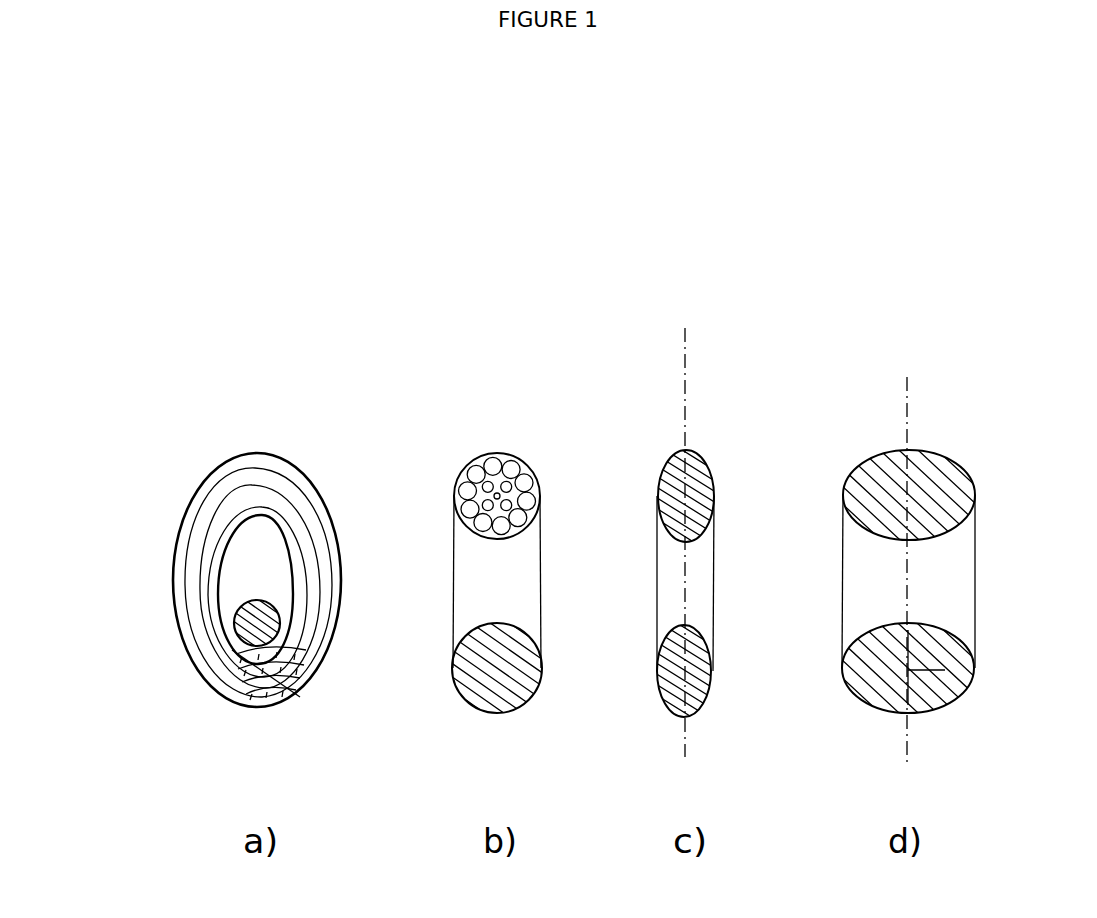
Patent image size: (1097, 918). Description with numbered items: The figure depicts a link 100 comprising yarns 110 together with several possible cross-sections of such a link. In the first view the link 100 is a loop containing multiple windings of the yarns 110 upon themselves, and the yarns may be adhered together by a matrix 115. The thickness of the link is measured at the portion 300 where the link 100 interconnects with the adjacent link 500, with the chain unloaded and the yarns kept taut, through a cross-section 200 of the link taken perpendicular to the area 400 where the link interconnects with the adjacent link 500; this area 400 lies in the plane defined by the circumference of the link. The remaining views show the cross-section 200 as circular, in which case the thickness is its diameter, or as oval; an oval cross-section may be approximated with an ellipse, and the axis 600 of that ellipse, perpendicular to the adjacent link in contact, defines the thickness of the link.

The link 100 is at (162, 573).
The yarns 110 is at (218, 481).
The adjacent link 500 is at (257, 603).
The area 400 is at (300, 648).
The portion 300 is at (300, 672).
The cross-section 200 is at (272, 700).
The matrix 115 is at (510, 462).
The axis 600 is at (712, 690).